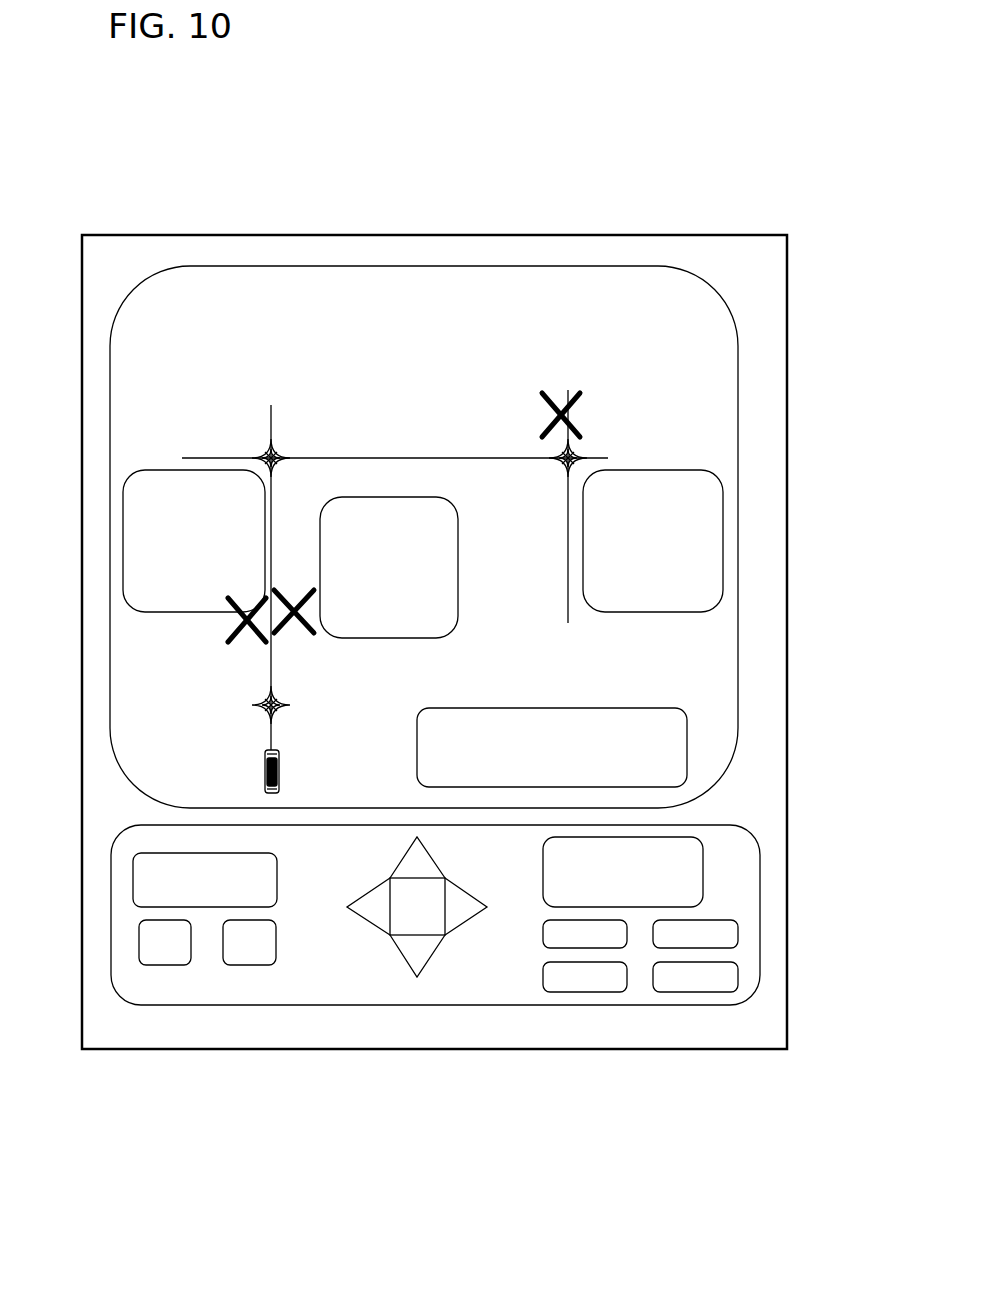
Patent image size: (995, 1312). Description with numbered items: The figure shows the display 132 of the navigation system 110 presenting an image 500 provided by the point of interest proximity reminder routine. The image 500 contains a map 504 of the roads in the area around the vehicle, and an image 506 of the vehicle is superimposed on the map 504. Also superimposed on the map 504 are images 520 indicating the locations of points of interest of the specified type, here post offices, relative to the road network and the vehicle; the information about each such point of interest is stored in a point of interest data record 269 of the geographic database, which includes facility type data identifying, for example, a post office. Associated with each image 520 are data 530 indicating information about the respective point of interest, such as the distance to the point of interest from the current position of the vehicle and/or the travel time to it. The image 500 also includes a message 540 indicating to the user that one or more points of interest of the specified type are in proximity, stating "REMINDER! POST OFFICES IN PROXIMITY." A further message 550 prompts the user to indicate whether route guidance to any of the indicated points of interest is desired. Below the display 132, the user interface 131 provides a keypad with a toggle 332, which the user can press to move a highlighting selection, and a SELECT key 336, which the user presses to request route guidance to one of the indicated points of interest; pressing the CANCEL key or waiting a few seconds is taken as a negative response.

The navigation system 110 is at (528, 225).
The display 132 is at (160, 283).
The message 540 is at (568, 328).
The image 500 is at (150, 407).
The map 504 is at (327, 245).
The images indicating locations of points of interest 520 is at (592, 387).
The data 530 is at (155, 468).
The point of interest data record 269 is at (635, 443).
The image of the vehicle 506 is at (250, 763).
The message 550 is at (648, 685).
The user interface 131 is at (333, 973).
The toggle 332 is at (377, 935).
The SELECT key 336 is at (708, 868).